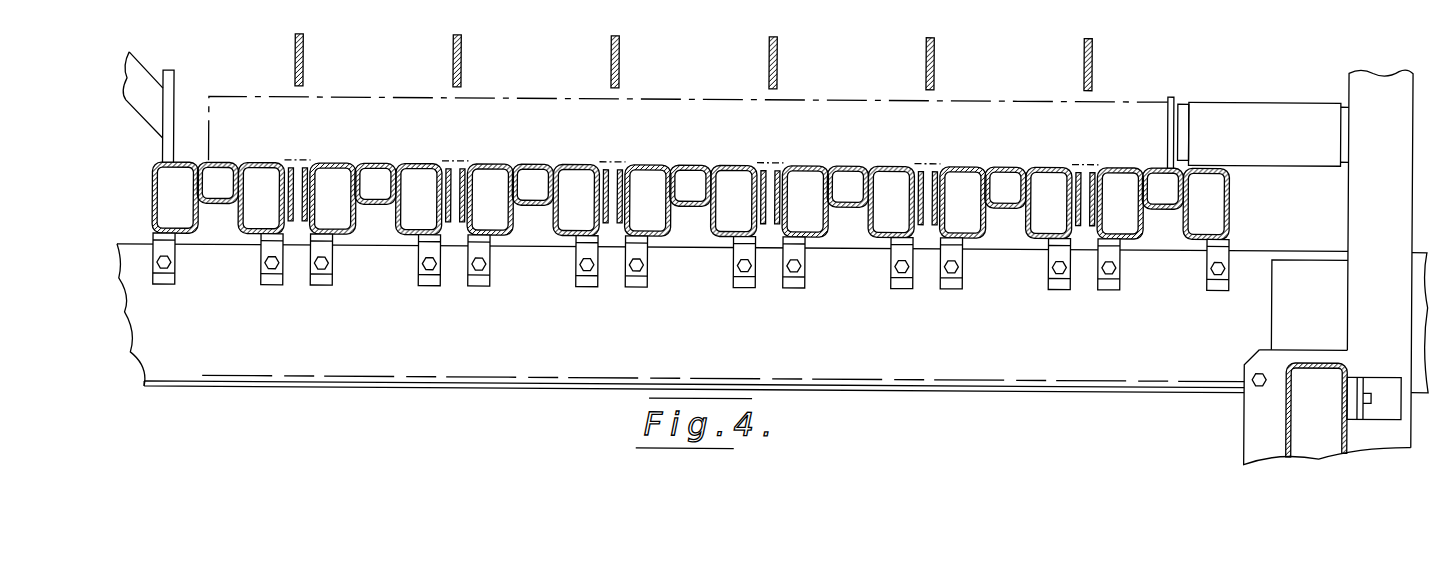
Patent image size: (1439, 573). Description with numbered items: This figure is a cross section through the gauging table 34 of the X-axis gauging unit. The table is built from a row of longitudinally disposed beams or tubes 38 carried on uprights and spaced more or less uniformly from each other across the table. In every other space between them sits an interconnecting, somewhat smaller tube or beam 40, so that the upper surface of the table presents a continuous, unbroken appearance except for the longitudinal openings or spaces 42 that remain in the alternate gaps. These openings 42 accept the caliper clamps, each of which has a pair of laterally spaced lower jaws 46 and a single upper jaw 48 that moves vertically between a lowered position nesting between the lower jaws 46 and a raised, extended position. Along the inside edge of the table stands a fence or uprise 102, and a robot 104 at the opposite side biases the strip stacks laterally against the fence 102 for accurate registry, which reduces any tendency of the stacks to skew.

The gauging table 34 is at (1287, 406).
The beams or tubes 38 is at (957, 161).
The interconnecting smaller tubes or beams 40 is at (1006, 162).
The longitudinal openings or spaces 42 is at (775, 161).
The lower jaws 46 is at (920, 163).
The upper jaw 48 is at (1083, 44).
The fence or uprise 102 is at (1174, 94).
The robot 104 is at (174, 80).